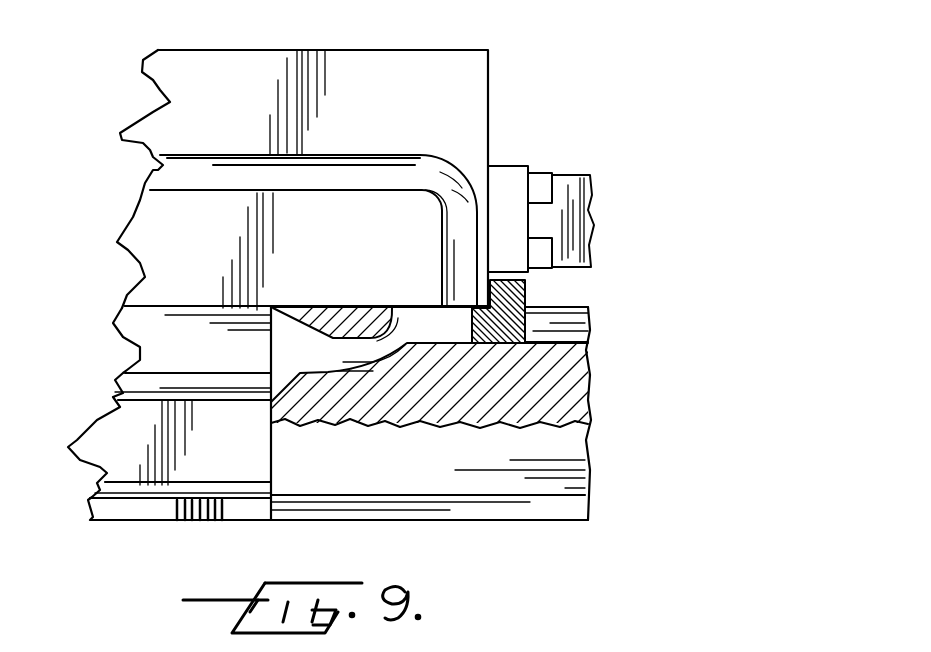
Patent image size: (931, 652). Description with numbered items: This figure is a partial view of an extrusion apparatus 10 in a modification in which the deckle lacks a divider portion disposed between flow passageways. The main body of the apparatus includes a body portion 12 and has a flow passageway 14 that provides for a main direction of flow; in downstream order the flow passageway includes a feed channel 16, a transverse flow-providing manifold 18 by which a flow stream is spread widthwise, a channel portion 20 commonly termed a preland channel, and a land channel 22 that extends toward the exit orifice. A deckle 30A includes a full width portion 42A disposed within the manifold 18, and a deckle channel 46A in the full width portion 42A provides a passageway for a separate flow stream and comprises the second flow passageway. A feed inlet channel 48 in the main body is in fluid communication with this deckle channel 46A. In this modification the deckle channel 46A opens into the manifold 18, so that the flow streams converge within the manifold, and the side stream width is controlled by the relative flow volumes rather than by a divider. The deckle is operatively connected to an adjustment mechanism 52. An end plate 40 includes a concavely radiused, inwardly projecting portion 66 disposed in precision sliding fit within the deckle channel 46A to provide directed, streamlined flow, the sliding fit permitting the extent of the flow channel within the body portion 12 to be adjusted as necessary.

The extrusion apparatus 10 is at (500, 44).
The body portion 12 is at (258, 54).
The flow passageway 14 is at (162, 362).
The feed channel 16 is at (556, 324).
The transverse flow-providing manifold 18 is at (192, 325).
The preland channel 20 is at (135, 454).
The land channel 22 is at (167, 512).
The deckle 30A is at (303, 304).
The end plate 40 is at (531, 297).
The full width portion 42A is at (300, 373).
The deckle channel 46A is at (355, 350).
The feed inlet channel 48 is at (348, 168).
The adjustment mechanism 52 is at (556, 152).
The inwardly projecting portion 66 is at (474, 325).